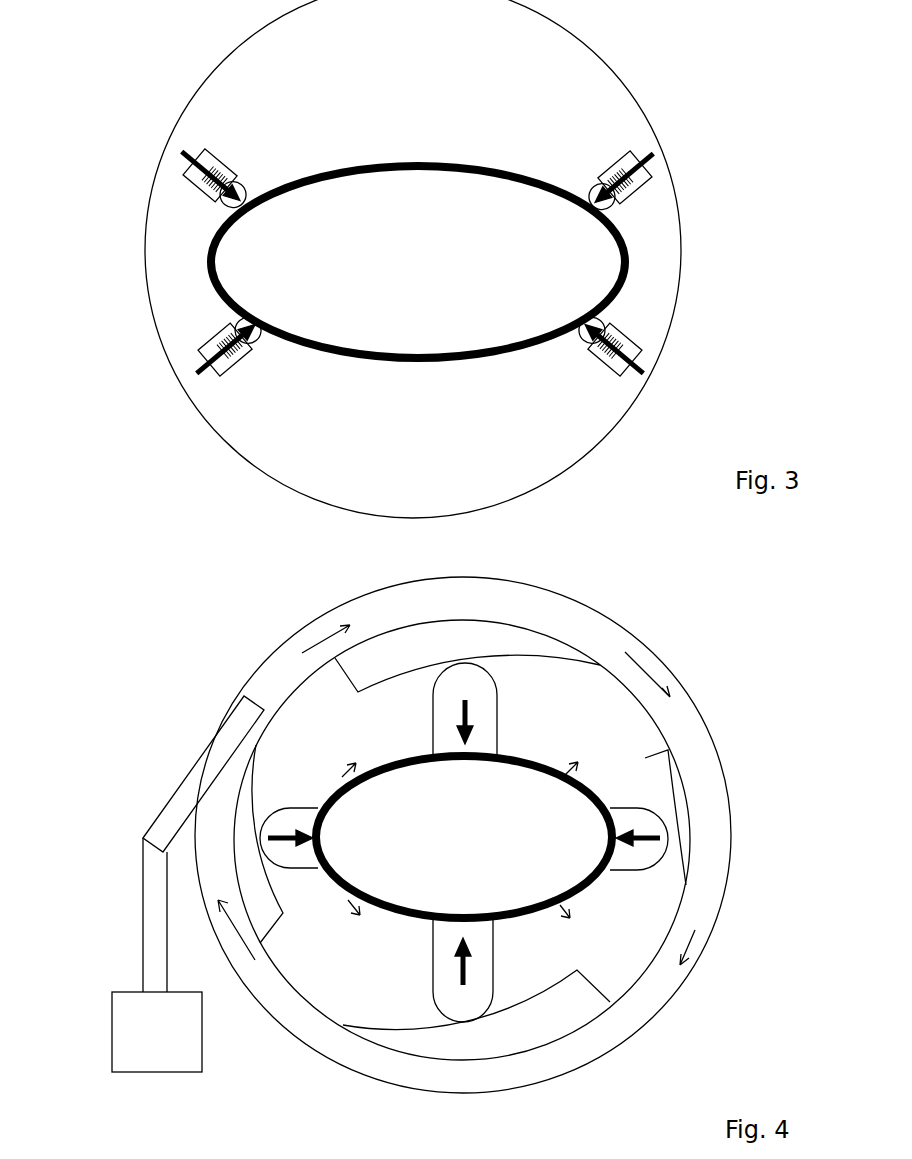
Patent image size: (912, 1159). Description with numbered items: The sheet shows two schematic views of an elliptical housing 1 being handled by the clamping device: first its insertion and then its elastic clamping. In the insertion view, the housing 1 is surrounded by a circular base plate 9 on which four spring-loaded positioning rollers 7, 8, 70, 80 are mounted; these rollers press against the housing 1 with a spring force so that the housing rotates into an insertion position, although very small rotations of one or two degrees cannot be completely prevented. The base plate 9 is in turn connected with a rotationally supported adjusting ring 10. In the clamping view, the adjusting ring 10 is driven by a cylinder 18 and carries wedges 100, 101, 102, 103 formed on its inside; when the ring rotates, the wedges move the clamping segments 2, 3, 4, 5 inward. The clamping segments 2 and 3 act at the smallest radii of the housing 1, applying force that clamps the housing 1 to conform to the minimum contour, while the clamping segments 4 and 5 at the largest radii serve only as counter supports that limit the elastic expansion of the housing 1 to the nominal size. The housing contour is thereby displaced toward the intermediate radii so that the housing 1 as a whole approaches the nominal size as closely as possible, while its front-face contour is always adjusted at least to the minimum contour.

In FIG. 3, the housing 1 is at (645, 241).
In FIG. 4, the housing 1 is at (338, 904).
In FIG. 4, the clamping segment 2 is at (289, 795).
In FIG. 4, the clamping segment 3 is at (642, 797).
In FIG. 4, the clamping segment 4 is at (429, 974).
In FIG. 4, the clamping segment 5 is at (499, 677).
In FIG. 3, the positioning roller 7 is at (212, 152).
In FIG. 3, the positioning roller 8 is at (613, 142).
In FIG. 3, the base plate 9 is at (285, 450).
In FIG. 4, the adjusting ring 10 is at (618, 647).
In FIG. 4, the cylinder 18 is at (140, 924).
In FIG. 3, the positioning roller 70 is at (222, 373).
In FIG. 3, the positioning roller 80 is at (613, 382).
In FIG. 4, the wedge 100 is at (406, 639).
In FIG. 4, the wedge 101 is at (679, 799).
In FIG. 4, the wedge 102 is at (577, 1003).
In FIG. 4, the wedge 103 is at (243, 823).